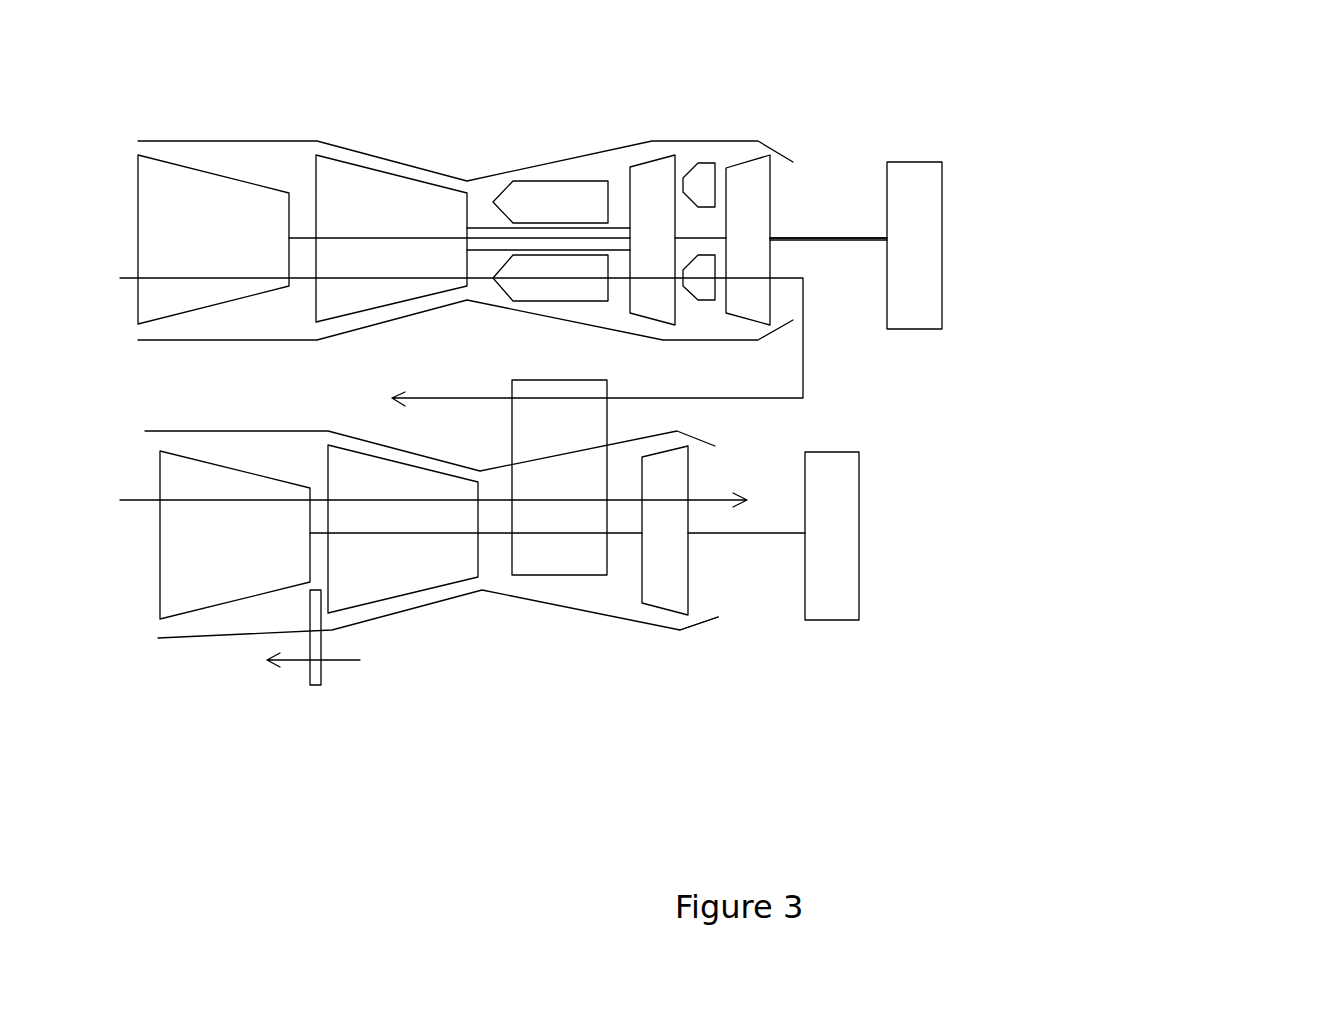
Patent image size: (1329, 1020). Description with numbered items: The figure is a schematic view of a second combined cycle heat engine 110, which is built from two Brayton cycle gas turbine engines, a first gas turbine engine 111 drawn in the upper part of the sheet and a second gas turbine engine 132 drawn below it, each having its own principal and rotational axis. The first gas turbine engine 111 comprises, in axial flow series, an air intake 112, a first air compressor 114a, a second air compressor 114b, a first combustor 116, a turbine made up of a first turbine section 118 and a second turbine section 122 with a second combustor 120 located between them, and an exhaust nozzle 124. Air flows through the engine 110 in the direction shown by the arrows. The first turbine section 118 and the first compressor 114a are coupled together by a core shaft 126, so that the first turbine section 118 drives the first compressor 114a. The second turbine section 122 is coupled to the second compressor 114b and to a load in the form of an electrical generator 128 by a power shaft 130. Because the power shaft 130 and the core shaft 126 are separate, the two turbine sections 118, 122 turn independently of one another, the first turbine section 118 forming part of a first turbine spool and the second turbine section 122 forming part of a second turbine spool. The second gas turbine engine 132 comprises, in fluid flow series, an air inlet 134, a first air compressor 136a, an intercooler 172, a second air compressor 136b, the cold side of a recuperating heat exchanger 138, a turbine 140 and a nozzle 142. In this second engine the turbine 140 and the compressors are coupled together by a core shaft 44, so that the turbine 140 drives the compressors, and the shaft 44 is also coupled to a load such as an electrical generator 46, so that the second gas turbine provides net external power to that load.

The combined cycle heat engine 110 is at (1155, 367).
The first gas turbine engine 111 is at (813, 88).
The air intake 112 is at (133, 332).
The first air compressor 114a is at (213, 218).
The second air compressor 114b is at (327, 205).
The first combustor 116 is at (510, 180).
The first turbine section 118 is at (652, 157).
The second combustor 120 is at (698, 163).
The second turbine section 122 is at (773, 183).
The exhaust nozzle 124 is at (805, 187).
The core shaft 126 is at (510, 242).
The electrical generator 128 is at (942, 185).
The power shaft 130 is at (832, 243).
The second gas turbine engine 132 is at (557, 687).
The air inlet 134 is at (145, 615).
The first air compressor 136a is at (182, 587).
The second air compressor 136b is at (405, 587).
The recuperating heat exchanger 138 is at (580, 577).
The turbine 140 is at (690, 558).
The nozzle 142 is at (725, 623).
The core shaft 44 is at (770, 530).
The electrical generator 46 is at (859, 575).
The intercooler 172 is at (315, 687).